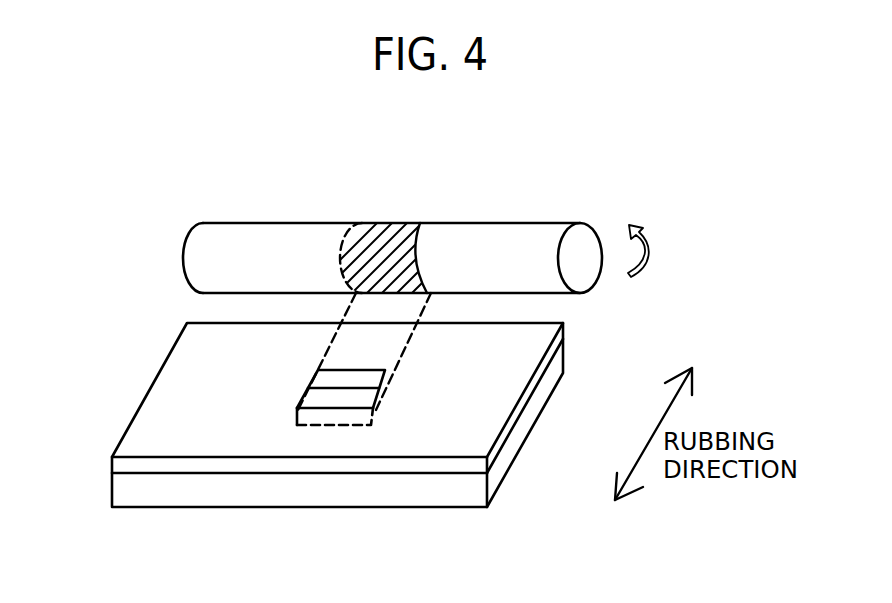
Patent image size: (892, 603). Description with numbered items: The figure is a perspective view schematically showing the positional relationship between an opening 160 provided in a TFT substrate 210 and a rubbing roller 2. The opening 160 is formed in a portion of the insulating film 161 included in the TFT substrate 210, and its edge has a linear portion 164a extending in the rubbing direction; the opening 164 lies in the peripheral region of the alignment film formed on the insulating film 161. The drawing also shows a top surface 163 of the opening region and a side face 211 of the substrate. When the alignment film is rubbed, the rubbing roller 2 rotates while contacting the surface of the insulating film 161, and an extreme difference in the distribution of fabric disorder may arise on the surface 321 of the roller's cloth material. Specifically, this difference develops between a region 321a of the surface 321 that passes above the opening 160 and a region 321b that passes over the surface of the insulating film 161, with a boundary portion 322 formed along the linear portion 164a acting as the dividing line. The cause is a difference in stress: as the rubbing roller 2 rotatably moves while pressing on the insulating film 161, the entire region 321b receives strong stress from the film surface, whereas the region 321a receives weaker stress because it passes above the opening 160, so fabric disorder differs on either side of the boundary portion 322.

The rubbing roller 2 is at (557, 222).
The surface of the cloth material 321 is at (497, 232).
The region passing above the opening 321a is at (397, 237).
The region passing the surface of the insulating film 321b is at (248, 238).
The boundary portion 322 is at (352, 224).
The opening 160 is at (309, 400).
The insulating film 161 is at (565, 328).
The top surface of protrusion 163 is at (352, 395).
The opening 164 is at (343, 410).
The linear portion 164a is at (383, 388).
The TFT substrate 210 is at (95, 462).
The substrate side face 211 is at (565, 355).